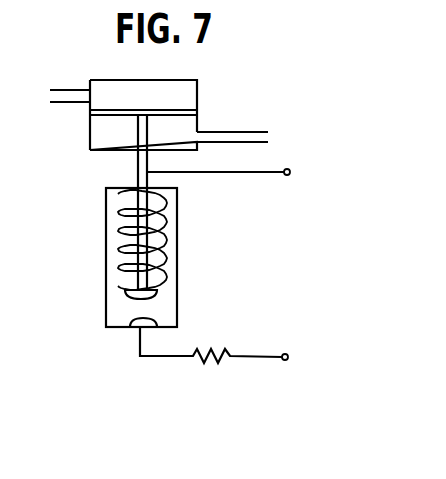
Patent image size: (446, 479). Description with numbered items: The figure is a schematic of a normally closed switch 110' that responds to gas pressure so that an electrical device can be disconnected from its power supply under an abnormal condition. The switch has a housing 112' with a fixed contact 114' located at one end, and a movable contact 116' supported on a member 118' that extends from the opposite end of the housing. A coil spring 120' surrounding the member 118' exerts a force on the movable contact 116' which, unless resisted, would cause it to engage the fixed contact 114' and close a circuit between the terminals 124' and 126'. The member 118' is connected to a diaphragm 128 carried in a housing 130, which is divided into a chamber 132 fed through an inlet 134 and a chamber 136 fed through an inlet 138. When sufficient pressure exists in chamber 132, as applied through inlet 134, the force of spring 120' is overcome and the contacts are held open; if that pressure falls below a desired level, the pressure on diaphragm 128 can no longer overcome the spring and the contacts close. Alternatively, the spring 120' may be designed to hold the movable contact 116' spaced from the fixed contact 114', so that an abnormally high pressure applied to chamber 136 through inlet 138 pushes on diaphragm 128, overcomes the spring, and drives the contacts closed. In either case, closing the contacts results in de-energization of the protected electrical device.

The normally closed switch 110' is at (185, 233).
The housing 112' is at (173, 257).
The fixed contact 114' is at (111, 343).
The movable contact 116' is at (97, 303).
The member 118' is at (92, 202).
The coil spring 120' is at (102, 229).
The terminal 124' is at (231, 202).
The terminal 126' is at (224, 375).
The diaphragm 128 is at (182, 107).
The housing 130 is at (197, 90).
The chamber 132 is at (185, 148).
The inlet 134 is at (268, 141).
The chamber 136 is at (148, 90).
The inlet 138 is at (52, 97).